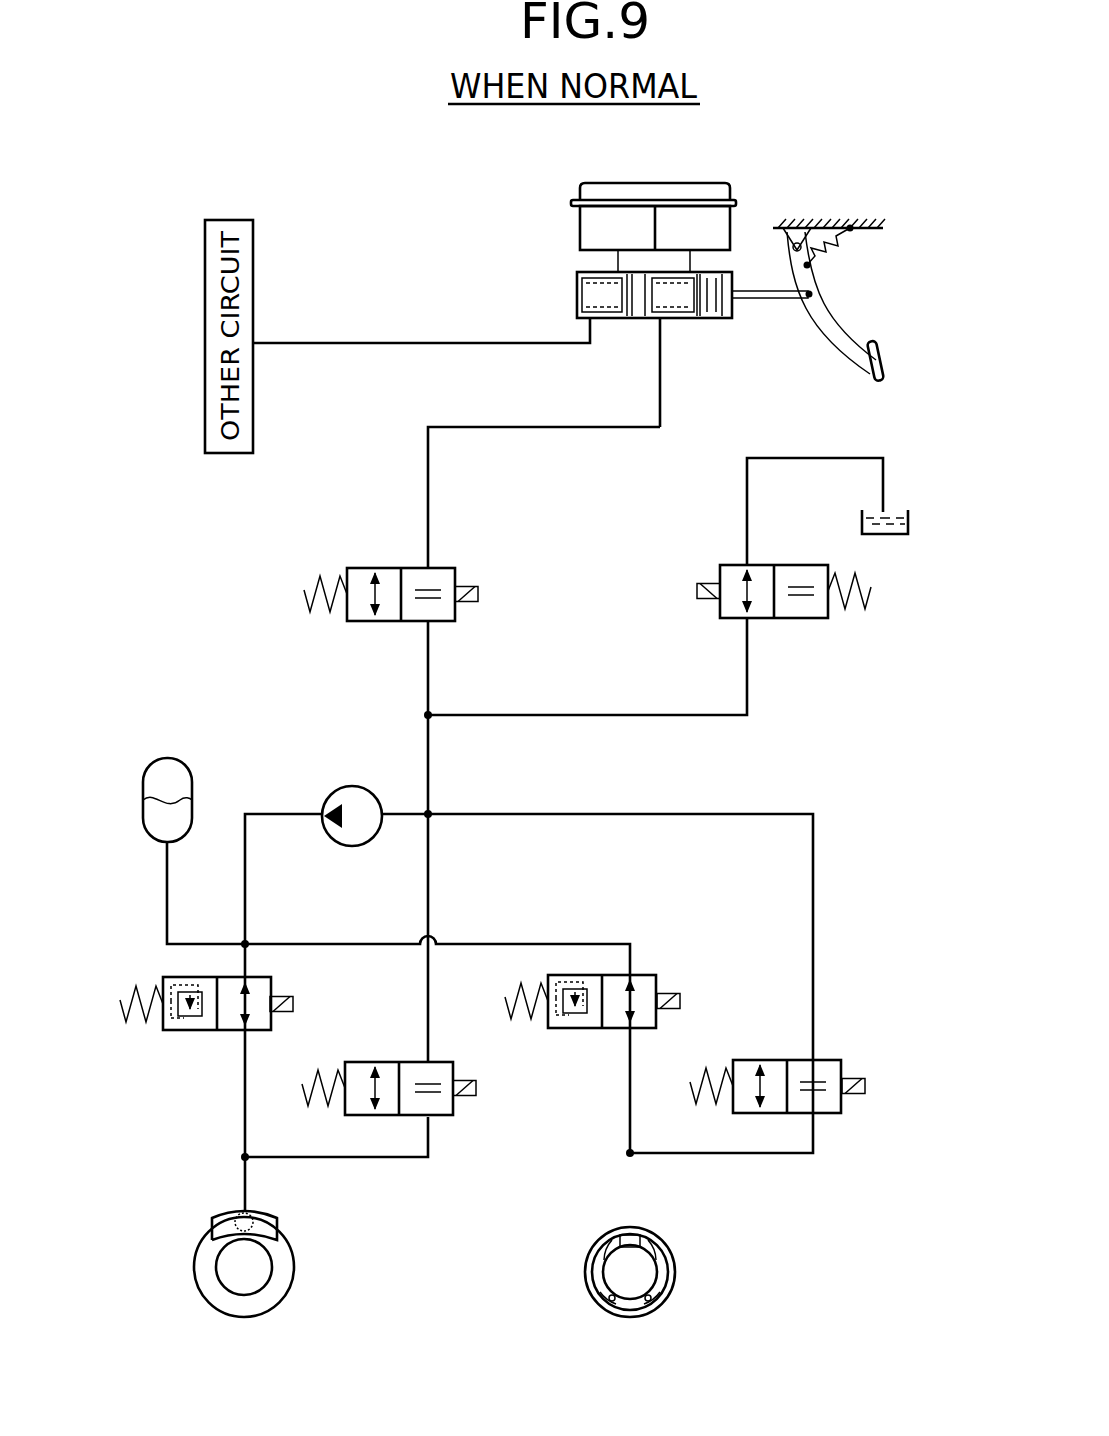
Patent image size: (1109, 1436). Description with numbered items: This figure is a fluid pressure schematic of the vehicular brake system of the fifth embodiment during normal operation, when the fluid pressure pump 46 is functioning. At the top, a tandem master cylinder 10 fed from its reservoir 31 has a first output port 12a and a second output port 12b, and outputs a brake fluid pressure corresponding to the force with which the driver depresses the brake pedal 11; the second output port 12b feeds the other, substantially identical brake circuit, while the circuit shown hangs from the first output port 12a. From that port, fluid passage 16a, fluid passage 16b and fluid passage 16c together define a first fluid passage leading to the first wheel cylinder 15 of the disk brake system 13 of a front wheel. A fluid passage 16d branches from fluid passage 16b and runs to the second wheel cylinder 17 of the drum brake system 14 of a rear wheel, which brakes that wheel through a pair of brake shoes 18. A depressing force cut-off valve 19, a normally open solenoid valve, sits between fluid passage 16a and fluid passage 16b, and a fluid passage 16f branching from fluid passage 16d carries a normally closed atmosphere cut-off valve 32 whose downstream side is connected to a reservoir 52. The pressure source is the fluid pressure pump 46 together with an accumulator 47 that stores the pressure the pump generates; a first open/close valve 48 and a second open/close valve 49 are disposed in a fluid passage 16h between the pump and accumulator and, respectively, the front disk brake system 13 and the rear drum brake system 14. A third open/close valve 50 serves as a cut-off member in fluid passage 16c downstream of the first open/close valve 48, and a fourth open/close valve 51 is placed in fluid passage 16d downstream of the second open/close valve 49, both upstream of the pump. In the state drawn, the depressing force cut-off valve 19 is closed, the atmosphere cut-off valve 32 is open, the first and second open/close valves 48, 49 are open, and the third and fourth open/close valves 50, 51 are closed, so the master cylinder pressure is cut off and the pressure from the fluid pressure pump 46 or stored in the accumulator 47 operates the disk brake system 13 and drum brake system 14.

The tandem master cylinder 10 is at (573, 295).
The brake pedal 11 is at (874, 376).
The first output port 12a is at (663, 320).
The second output port 12b is at (592, 320).
The disk brake system 13 is at (296, 1279).
The drum brake system 14 is at (670, 1240).
The first wheel cylinder 15 is at (232, 1208).
The fluid passage 16a is at (537, 425).
The fluid passage 16b is at (430, 668).
The fluid passage 16c is at (430, 877).
The fluid passage 16d is at (815, 895).
The fluid passage 16f is at (749, 500).
The fluid passage 16h is at (247, 893).
The second wheel cylinder 17 is at (606, 1262).
The brake shoes 18 is at (592, 1300).
The depressing force cut-off valve 19 is at (360, 625).
The reservoir 31 is at (578, 222).
The atmosphere cut-off valve 32 is at (722, 560).
The fluid pressure pump 46 is at (350, 786).
The accumulator 47 is at (192, 786).
The first open/close valve 48 is at (195, 1036).
The second open/close valve 49 is at (648, 972).
The third open/close valve 50 is at (448, 1122).
The fourth open/close valve 51 is at (831, 1057).
The reservoir 52 is at (893, 537).